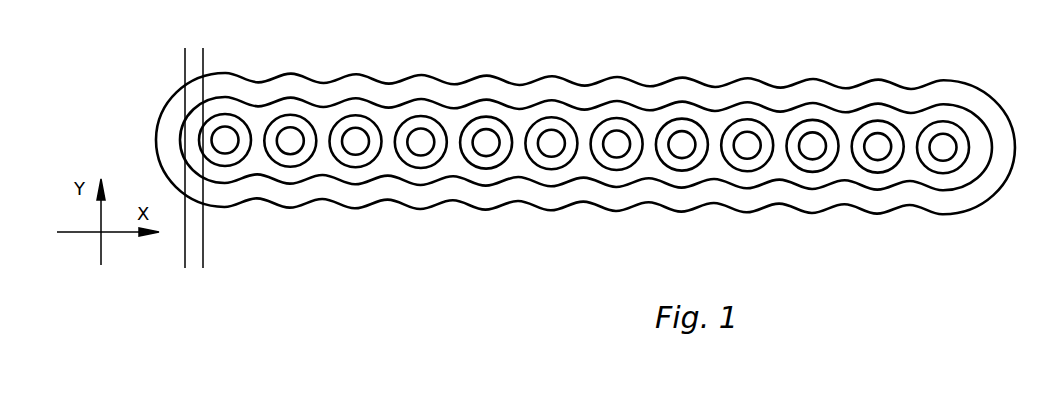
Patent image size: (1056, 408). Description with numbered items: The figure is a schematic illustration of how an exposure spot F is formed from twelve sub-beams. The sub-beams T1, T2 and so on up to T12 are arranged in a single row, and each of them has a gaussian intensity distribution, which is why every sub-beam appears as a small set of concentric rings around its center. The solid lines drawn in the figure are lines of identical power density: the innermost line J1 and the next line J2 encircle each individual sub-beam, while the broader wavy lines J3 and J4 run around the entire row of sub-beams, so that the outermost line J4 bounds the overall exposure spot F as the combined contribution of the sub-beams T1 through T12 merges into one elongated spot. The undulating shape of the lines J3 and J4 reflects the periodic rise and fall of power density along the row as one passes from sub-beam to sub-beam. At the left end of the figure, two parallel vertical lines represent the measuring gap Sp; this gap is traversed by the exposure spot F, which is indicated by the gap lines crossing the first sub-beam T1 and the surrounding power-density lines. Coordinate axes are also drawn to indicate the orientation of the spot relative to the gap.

The line of identical power density J1 is at (683, 130).
The line of identical power density J2 is at (703, 127).
The line of identical power density J3 is at (826, 107).
The line of identical power density J4 is at (898, 80).
The sub-beam T1 is at (222, 145).
The sub-beam T2 is at (288, 147).
The sub-beam T12 is at (940, 152).
The exposure spot F is at (585, 146).
The measuring gap Sp is at (210, 276).